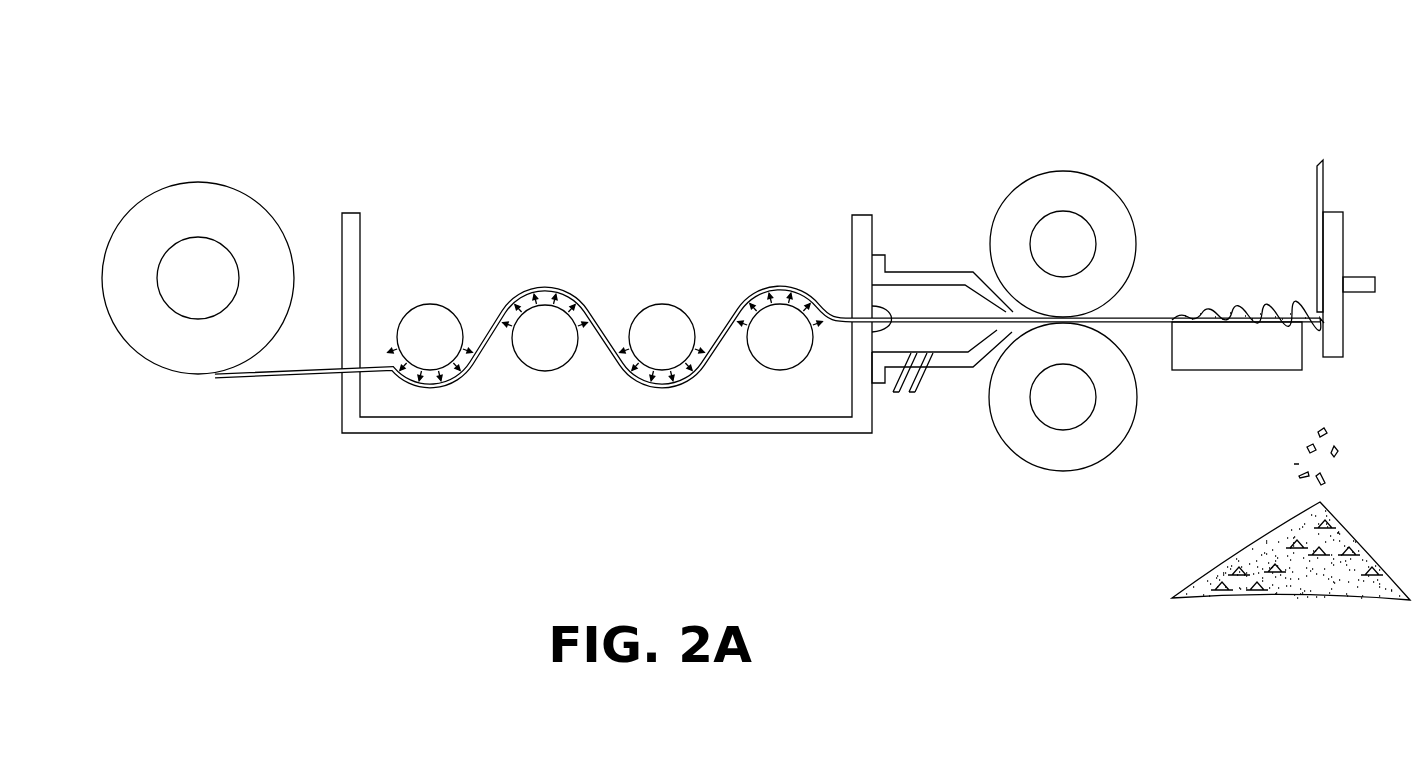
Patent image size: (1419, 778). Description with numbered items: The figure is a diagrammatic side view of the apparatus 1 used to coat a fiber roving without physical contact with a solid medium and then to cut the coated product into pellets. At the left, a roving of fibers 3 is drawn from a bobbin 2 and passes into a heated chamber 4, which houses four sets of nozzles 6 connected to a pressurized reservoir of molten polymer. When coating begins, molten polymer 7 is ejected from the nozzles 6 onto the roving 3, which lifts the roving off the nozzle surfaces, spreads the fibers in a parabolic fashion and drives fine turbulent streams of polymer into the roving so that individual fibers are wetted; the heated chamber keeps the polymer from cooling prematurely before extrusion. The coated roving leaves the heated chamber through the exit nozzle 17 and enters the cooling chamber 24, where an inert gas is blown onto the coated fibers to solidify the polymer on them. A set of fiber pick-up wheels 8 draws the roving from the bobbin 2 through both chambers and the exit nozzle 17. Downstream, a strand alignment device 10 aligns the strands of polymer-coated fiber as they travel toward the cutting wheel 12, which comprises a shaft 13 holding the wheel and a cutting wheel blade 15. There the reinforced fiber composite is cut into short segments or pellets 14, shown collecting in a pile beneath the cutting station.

The apparatus 1 is at (268, 61).
The bobbin 2 is at (210, 190).
The roving of fibers 3 is at (592, 300).
The heated chamber 4 is at (350, 212).
The nozzles 6 is at (780, 360).
The molten polymer 7 is at (818, 308).
The fiber pick-up wheels 8 is at (1057, 171).
The strand alignment device 10 is at (1243, 310).
The cutting wheel 12 is at (1312, 130).
The shaft 13 is at (1371, 278).
The pellets 14 is at (1306, 430).
The cutting wheel blade 15 is at (1317, 218).
The exit nozzle 17 is at (887, 305).
The cooling chamber 24 is at (950, 272).